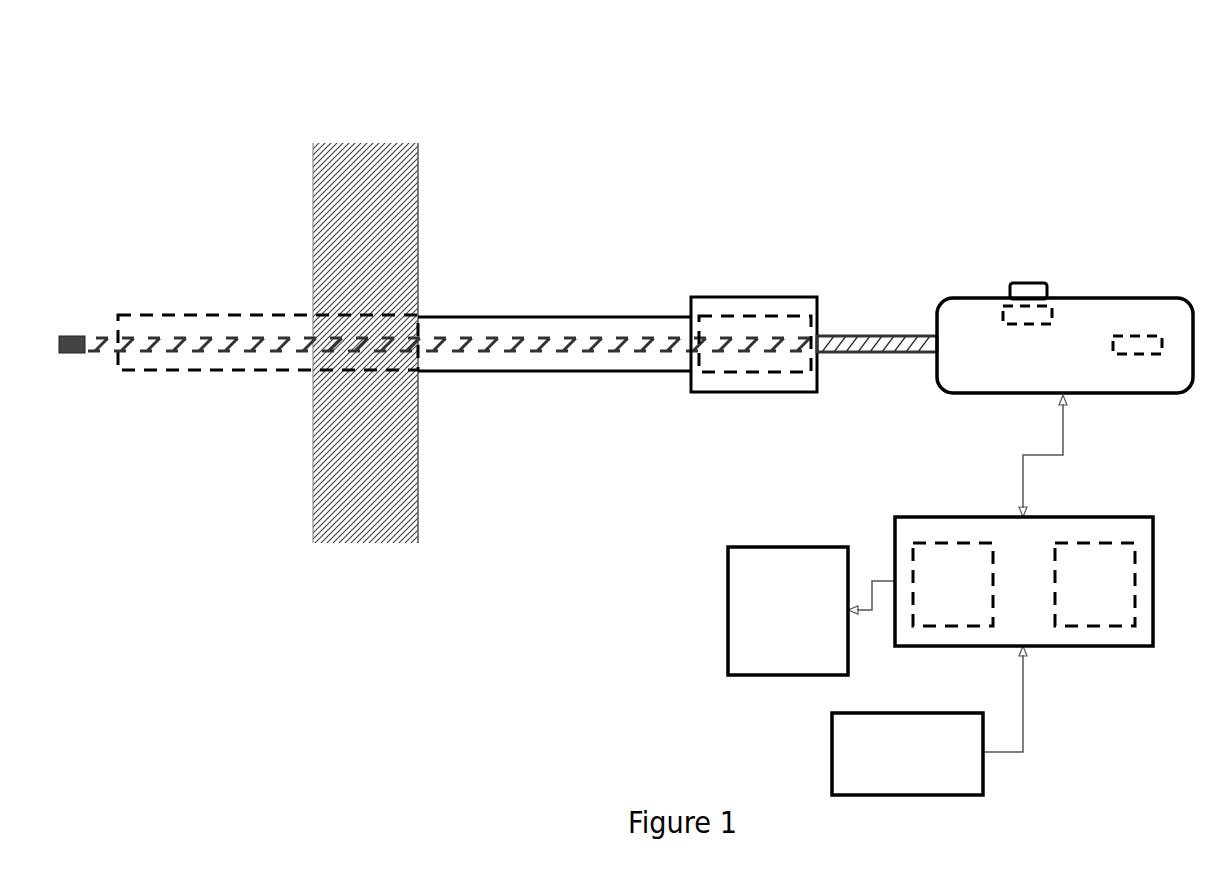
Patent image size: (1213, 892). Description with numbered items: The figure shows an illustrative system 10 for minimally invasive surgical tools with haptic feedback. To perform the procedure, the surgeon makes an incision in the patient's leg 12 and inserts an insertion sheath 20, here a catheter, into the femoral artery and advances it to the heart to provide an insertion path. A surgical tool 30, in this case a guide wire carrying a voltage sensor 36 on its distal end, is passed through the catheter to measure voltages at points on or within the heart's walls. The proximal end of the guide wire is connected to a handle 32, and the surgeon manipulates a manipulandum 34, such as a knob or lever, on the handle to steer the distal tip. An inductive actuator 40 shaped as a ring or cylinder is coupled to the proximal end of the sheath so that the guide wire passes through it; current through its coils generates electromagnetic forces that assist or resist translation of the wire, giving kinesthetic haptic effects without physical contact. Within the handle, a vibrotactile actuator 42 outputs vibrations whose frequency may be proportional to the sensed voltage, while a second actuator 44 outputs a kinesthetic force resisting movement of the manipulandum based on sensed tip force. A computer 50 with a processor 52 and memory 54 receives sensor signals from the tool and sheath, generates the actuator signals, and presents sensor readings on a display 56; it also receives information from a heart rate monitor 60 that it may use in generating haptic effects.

The system 10 is at (1061, 141).
The patient's leg 12 is at (369, 126).
The insertion sheath 20 is at (553, 316).
The surgical tool 30 is at (878, 334).
The handle 32 is at (1050, 360).
The manipulandum 34 is at (1028, 282).
The voltage sensor 36 is at (70, 335).
The inductive actuator 40 is at (756, 296).
The vibrotactile actuator 42 is at (1140, 335).
The second actuator 44 is at (1053, 317).
The computer 50 is at (1008, 596).
The processor 52 is at (937, 600).
The memory 54 is at (1080, 596).
The display 56 is at (773, 625).
The heart rate monitor 60 is at (892, 768).